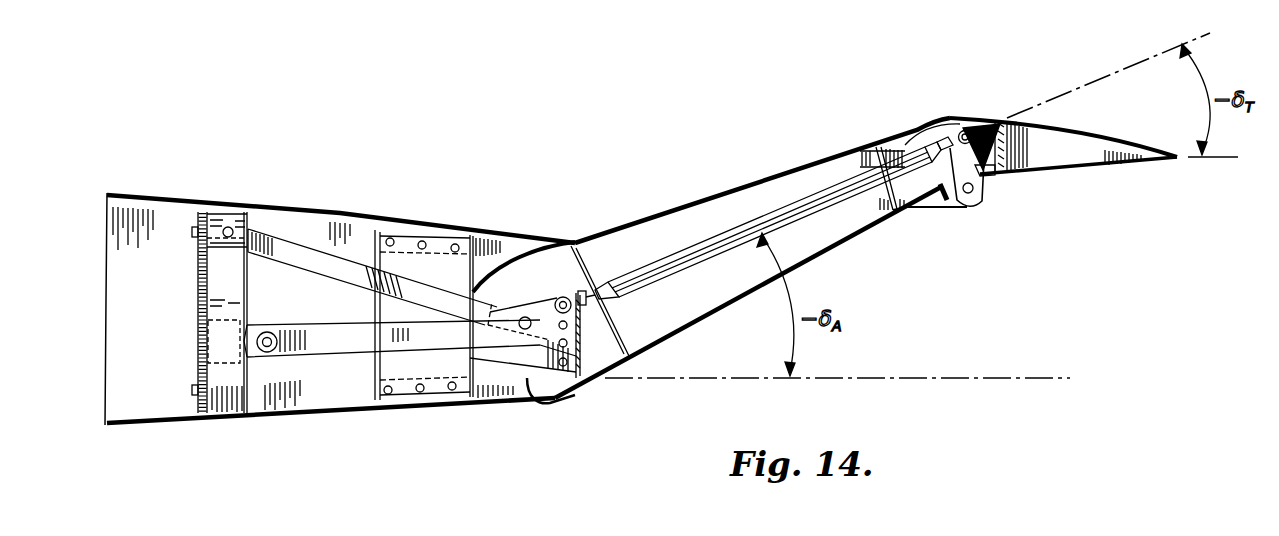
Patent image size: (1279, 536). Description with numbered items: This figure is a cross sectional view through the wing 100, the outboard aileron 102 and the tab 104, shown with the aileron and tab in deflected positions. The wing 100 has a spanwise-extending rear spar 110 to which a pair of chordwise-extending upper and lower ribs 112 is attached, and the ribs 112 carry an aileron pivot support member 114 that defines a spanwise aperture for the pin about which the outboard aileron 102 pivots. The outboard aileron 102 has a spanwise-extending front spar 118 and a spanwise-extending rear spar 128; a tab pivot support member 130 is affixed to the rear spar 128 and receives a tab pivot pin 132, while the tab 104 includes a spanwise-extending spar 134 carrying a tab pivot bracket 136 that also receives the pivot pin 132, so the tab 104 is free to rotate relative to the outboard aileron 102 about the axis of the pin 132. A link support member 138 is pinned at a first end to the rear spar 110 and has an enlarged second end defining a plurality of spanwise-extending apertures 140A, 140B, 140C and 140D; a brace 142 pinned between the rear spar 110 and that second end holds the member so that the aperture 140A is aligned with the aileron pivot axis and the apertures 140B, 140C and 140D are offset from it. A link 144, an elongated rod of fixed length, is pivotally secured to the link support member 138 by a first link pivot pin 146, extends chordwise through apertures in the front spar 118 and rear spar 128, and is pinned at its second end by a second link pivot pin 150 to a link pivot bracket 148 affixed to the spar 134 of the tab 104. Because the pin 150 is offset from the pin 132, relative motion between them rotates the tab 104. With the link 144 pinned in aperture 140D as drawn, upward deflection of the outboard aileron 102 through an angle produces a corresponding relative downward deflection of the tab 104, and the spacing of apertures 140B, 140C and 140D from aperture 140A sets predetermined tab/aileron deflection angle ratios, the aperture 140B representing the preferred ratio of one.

The wing 100 is at (331, 308).
The outboard aileron 102 is at (743, 282).
The tab 104 is at (1074, 162).
The rear spar 110 is at (199, 298).
The upper and lower ribs 112 is at (362, 232).
The aileron pivot support member 114 is at (437, 262).
The front spar 118 is at (585, 262).
The rear spar 128 is at (876, 203).
The tab pivot support member 130 is at (941, 198).
The tab pivot pin 132 is at (967, 196).
The spar 134 is at (1010, 120).
The tab pivot bracket 136 is at (990, 178).
The link support member 138 is at (357, 340).
The aperture 140A is at (568, 378).
The aperture 140B is at (570, 342).
The aperture 140C is at (570, 324).
The aperture 140D is at (565, 286).
The brace 142 is at (304, 250).
The link 144 is at (685, 258).
The first link pivot pin 146 is at (556, 297).
The link pivot bracket 148 is at (985, 132).
The second link pivot pin 150 is at (962, 130).